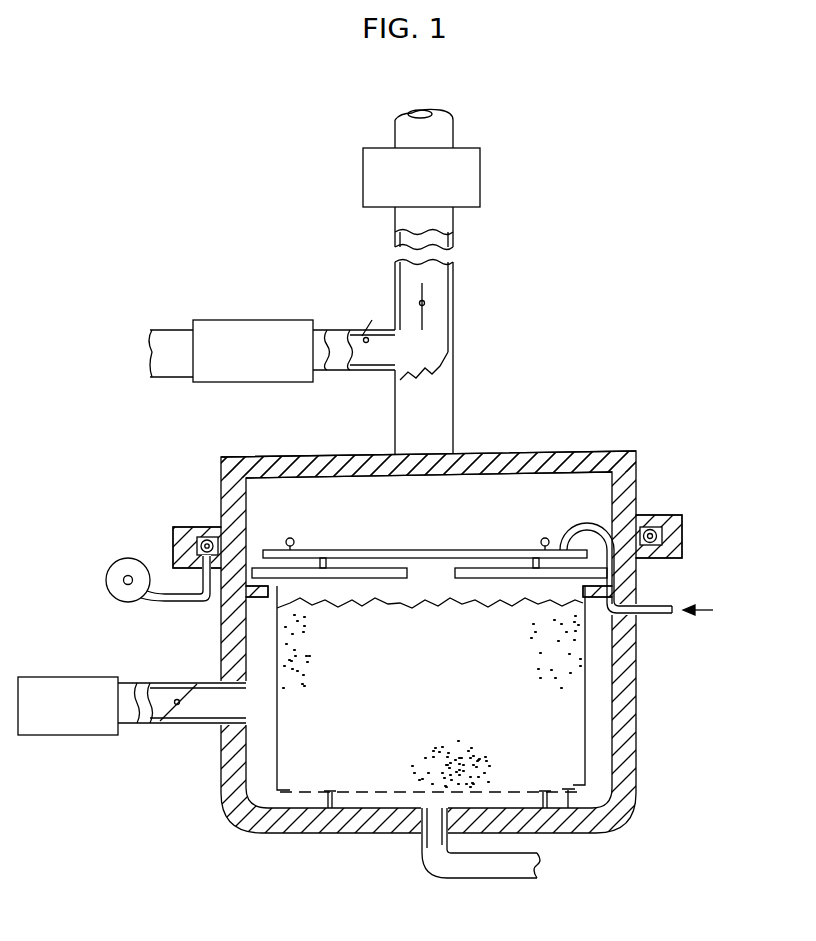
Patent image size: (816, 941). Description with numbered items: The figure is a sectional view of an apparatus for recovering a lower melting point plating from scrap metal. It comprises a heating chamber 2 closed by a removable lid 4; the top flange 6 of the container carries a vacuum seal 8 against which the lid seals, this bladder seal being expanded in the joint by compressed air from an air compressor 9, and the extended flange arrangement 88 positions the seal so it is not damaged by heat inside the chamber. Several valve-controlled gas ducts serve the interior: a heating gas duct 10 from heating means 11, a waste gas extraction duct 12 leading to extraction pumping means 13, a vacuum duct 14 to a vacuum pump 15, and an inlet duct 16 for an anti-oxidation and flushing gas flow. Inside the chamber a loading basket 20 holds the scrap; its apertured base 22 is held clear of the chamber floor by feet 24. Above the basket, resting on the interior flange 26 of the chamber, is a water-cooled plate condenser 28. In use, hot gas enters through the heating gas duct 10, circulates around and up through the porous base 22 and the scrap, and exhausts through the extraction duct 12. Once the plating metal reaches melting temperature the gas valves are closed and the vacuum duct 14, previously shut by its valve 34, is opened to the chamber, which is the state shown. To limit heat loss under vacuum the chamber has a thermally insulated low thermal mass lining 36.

The heating chamber 2 is at (623, 760).
The removable lid 4 is at (493, 460).
The top flange 6 is at (673, 543).
The vacuum seal 8 is at (650, 533).
The air compressor 9 is at (113, 580).
The heating gas duct 10 is at (177, 688).
The heating means 11 is at (68, 706).
The waste gas extraction duct 12 is at (360, 340).
The extraction pumping means 13 is at (231, 351).
The vacuum duct 14 is at (437, 293).
The vacuum pump 15 is at (421, 177).
The inlet duct 16 is at (488, 868).
The loading basket 20 is at (277, 747).
The apertured base 22 is at (568, 795).
The feet 24 is at (327, 802).
The interior flange 26 is at (250, 588).
The water-cooled plate condenser 28 is at (367, 550).
The valve 34 is at (427, 320).
The thermally insulated low thermal mass lining 36 is at (630, 668).
The extended flange arrangement 88 is at (173, 550).